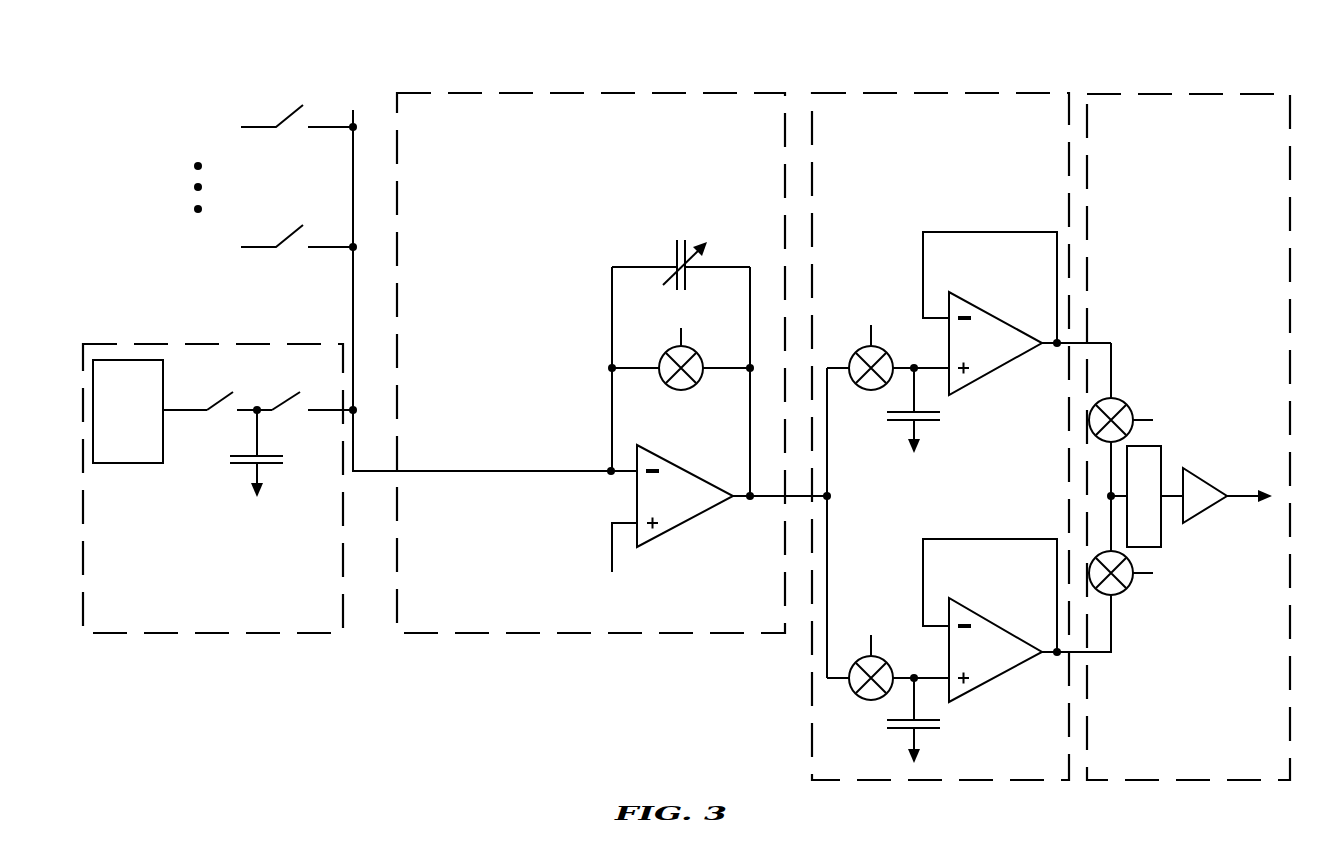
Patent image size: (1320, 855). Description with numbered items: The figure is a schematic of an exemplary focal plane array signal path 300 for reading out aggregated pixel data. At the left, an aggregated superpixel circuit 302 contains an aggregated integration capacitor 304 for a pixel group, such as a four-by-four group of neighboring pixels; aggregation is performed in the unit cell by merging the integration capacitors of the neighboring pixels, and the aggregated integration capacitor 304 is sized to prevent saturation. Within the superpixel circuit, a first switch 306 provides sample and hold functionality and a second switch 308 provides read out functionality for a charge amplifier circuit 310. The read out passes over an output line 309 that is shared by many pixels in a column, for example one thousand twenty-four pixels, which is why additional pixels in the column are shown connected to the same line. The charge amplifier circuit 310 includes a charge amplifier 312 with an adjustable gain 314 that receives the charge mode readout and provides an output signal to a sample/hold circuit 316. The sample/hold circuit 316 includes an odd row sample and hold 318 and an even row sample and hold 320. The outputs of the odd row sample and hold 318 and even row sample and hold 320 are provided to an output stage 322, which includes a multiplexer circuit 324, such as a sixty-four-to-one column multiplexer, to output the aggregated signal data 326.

The focal plane array signal path 300 is at (1160, 48).
The aggregated superpixel circuit 302 is at (146, 616).
The aggregated integration capacitor 304 is at (242, 467).
The first switch 306 is at (222, 412).
The second switch 308 is at (294, 412).
The output line 309 is at (352, 296).
The charge amplifier circuit 310 is at (607, 146).
The charge amplifier 312 is at (702, 508).
The adjustable gain 314 is at (675, 256).
The sample/hold circuit 316 is at (957, 146).
The odd row sample and hold 318 is at (1012, 355).
The even row sample and hold 320 is at (1012, 663).
The output stage 322 is at (1204, 146).
The multiplexer circuit 324 is at (1195, 440).
The aggregated signal data 326 is at (1245, 493).